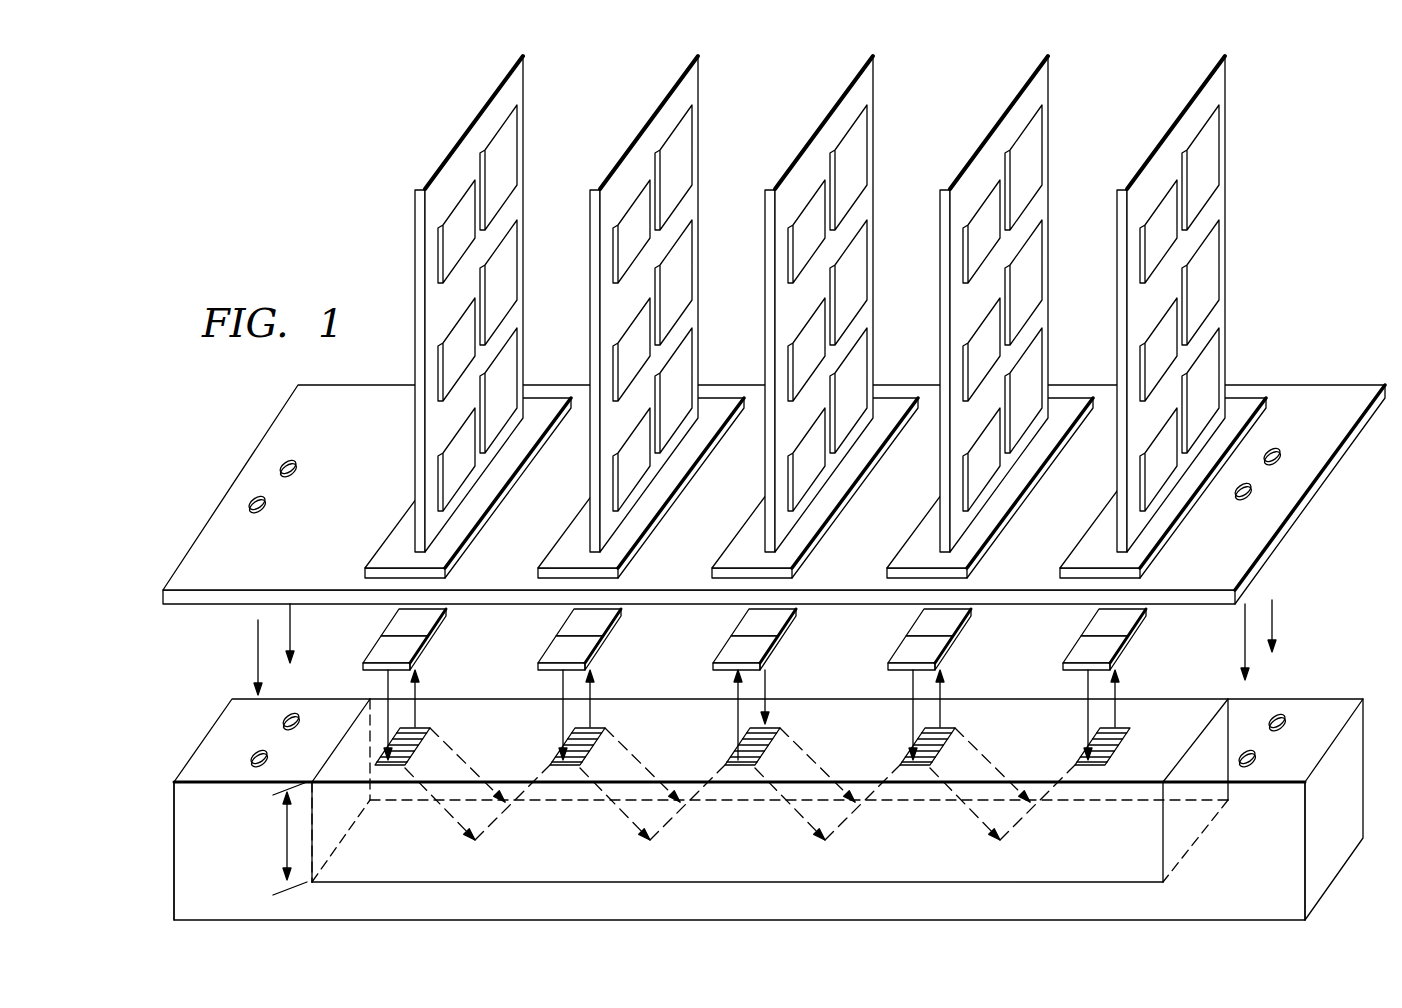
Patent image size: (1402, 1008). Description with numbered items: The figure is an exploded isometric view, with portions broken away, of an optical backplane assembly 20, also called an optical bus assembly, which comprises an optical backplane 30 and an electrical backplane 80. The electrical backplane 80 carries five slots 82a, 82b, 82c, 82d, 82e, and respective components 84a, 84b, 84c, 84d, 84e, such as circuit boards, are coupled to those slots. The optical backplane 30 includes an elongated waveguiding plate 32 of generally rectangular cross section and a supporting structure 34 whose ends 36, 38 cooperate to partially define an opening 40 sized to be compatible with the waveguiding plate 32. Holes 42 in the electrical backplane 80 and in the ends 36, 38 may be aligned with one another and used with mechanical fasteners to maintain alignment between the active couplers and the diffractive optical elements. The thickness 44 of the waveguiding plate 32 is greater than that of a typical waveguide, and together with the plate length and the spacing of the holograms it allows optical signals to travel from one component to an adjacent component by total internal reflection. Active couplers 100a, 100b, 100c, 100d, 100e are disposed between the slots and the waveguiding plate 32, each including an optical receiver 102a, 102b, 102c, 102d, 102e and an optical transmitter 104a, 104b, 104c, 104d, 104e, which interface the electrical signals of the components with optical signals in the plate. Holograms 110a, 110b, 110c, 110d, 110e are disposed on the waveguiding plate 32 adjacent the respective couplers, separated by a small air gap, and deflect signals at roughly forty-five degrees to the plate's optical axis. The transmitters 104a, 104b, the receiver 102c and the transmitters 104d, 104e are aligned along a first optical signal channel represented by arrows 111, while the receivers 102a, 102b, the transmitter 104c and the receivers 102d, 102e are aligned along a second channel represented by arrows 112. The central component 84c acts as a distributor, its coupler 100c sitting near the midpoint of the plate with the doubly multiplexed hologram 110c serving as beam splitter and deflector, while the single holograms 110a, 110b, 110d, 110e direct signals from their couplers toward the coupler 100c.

The optical backplane assembly 20 is at (1289, 244).
The optical backplane 30 is at (768, 774).
The waveguiding plate 32 is at (435, 875).
The supporting structure 34 is at (1110, 886).
The end of supporting structure 36 is at (218, 795).
The end of supporting structure 38 is at (1268, 793).
The opening 40 is at (322, 767).
The holes 42 is at (295, 464).
The thickness 44 is at (288, 838).
The electrical backplane 80 is at (1330, 372).
The slot 82a is at (542, 405).
The slot 82b is at (715, 405).
The slot 82c is at (889, 405).
The slot 82d is at (1064, 405).
The slot 82e is at (1237, 405).
The component 84a is at (467, 130).
The component 84b is at (642, 130).
The distributor 84c is at (817, 130).
The component 84d is at (992, 130).
The component 84e is at (1169, 130).
The active coupler 100a is at (386, 684).
The active coupler 100b is at (561, 684).
The active coupler 100c is at (735, 684).
The active coupler 100d is at (910, 684).
The active coupler 100e is at (1103, 684).
The optical receiver 102a is at (390, 623).
The optical receiver 102b is at (565, 623).
The optical receiver 102c is at (722, 650).
The optical receiver 102d is at (915, 623).
The optical receiver 102e is at (1090, 623).
The optical transmitter 104a is at (372, 650).
The optical transmitter 104b is at (547, 650).
The optical transmitter 104c is at (740, 623).
The optical transmitter 104d is at (897, 650).
The optical transmitter 104e is at (1072, 650).
The hologram 110a is at (432, 729).
The hologram 110b is at (607, 729).
The doubly multiplexed hologram 110c is at (782, 729).
The hologram 110d is at (957, 729).
The hologram 110e is at (1132, 729).
The arrows representing first optical signal channel 111 is at (495, 823).
The arrows representing second optical signal channel 112 is at (476, 772).